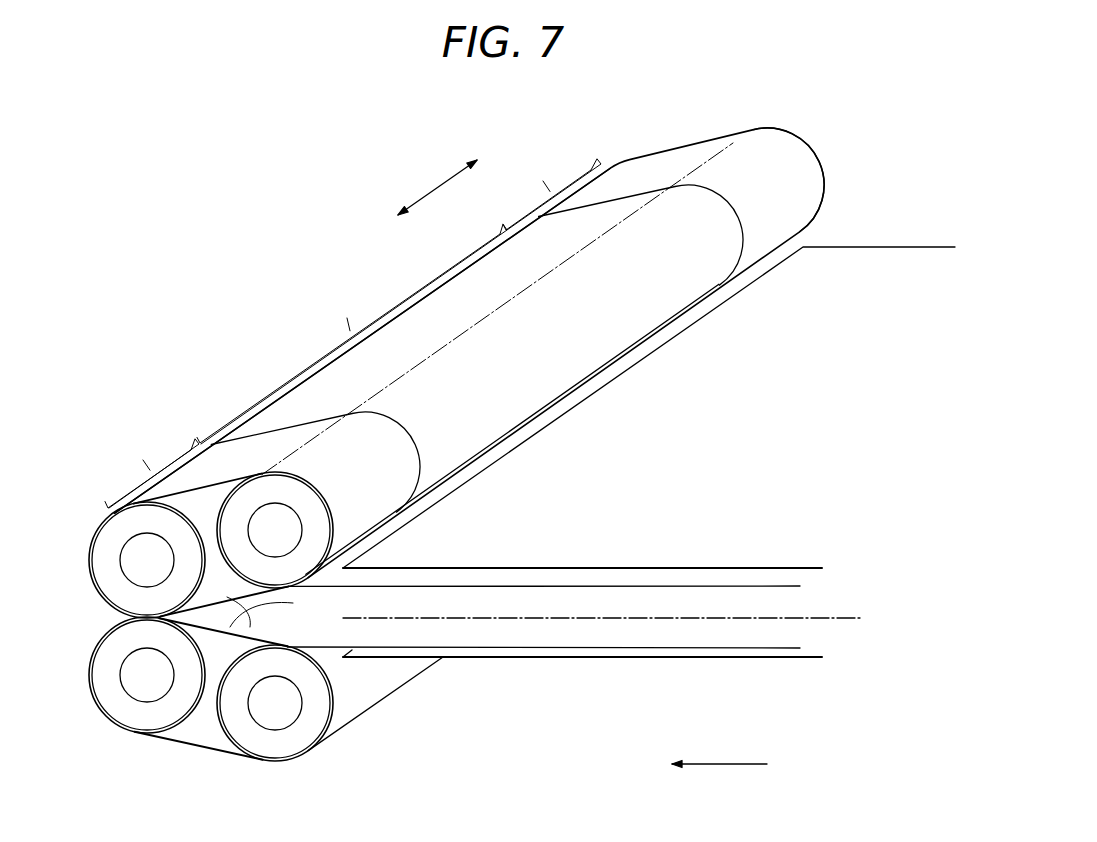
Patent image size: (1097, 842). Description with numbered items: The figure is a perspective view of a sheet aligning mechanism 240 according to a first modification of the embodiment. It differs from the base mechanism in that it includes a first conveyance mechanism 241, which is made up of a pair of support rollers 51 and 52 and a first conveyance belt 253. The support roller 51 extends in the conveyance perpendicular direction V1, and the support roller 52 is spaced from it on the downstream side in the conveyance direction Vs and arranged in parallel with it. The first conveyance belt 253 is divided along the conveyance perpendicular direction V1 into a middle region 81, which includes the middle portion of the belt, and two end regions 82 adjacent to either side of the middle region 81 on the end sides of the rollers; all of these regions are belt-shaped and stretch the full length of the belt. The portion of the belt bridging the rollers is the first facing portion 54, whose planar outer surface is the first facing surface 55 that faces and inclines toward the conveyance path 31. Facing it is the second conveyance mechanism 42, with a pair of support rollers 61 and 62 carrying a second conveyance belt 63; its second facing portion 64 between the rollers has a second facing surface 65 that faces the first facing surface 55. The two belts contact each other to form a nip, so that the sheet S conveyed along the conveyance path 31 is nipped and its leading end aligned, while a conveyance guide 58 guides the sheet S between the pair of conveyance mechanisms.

The sheet aligning mechanism 240 is at (830, 122).
The first conveyance mechanism 241 is at (825, 182).
The first conveyance belt 253 is at (312, 372).
The end region 82 is at (353, 329).
The middle region 81 is at (352, 334).
The support roller 52 is at (103, 557).
The support roller 51 is at (312, 518).
The first facing surface 55 is at (250, 625).
The first facing portion 54 is at (226, 592).
The second conveyance mechanism 42 is at (302, 758).
The support roller 62 is at (103, 672).
The support roller 61 is at (315, 712).
The second facing surface 65 is at (240, 620).
The second conveyance belt 63 is at (177, 740).
The second facing portion 64 is at (222, 625).
The conveyance guide 58 is at (883, 247).
The sheet S is at (552, 658).
The conveyance path 31 is at (862, 620).
The conveyance perpendicular direction V1 is at (437, 183).
The conveyance direction Vs is at (719, 781).